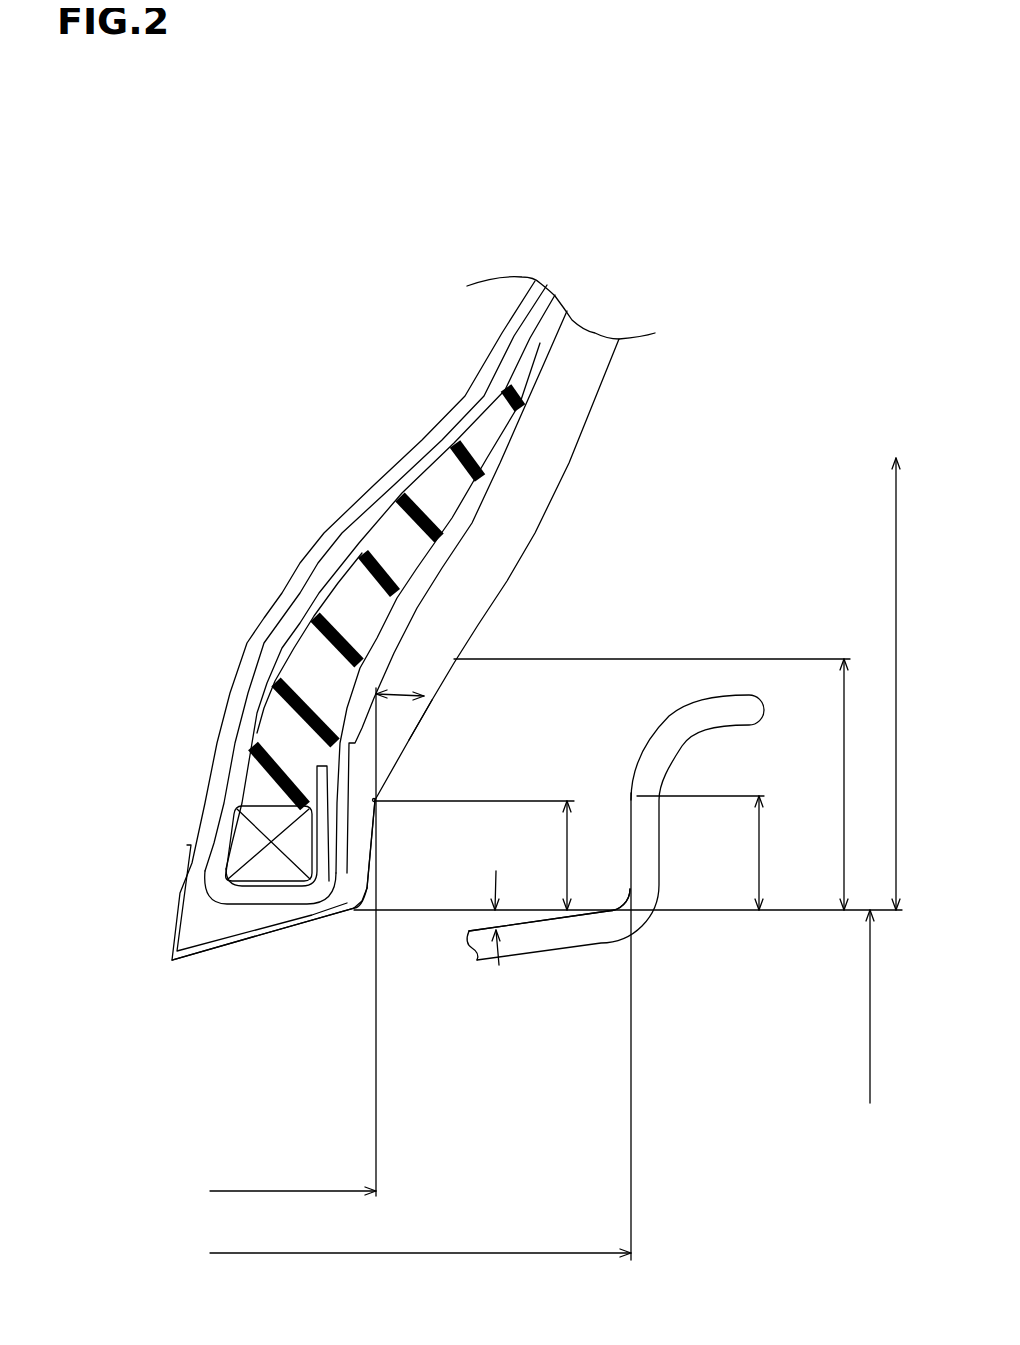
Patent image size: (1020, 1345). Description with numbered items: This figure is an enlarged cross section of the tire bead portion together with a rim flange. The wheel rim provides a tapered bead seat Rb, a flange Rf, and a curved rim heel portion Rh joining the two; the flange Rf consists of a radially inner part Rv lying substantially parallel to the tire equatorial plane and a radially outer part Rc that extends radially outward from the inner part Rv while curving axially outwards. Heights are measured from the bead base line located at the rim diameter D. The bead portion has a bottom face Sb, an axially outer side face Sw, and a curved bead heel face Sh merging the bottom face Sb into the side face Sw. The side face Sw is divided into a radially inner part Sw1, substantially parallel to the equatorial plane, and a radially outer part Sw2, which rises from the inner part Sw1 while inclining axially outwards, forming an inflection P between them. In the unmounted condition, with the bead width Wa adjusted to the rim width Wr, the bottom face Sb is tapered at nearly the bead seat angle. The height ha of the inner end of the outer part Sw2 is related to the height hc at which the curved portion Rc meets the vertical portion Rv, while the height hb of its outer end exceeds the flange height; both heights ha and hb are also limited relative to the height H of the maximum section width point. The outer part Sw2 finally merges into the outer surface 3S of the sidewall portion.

The outer surface of the sidewall portion 3S is at (595, 400).
The inflection P is at (367, 796).
The radially outer part Sw2 is at (407, 737).
The radially inner part Sw1 is at (373, 847).
The axially outer side face Sw is at (567, 697).
The height of the radially inner end of the radially outer part ha is at (482, 855).
The height of the radially outer end of the radially outer part hb is at (845, 784).
The height at which the curved portion meets the vertical portion hc is at (707, 853).
The height of the maximum cross sectional width point H is at (896, 684).
The rim diameter D is at (872, 1023).
The radially outer part of the flange Rc is at (695, 717).
The flange Rf is at (775, 682).
The radially inner part of the flange Rv is at (630, 845).
The curved rim heel portion Rh is at (643, 917).
The bead seat Rb is at (553, 922).
The bottom face Sb is at (203, 950).
The curved bead heel face Sh is at (363, 913).
The bead width Wa is at (266, 1193).
The rim width Wr is at (395, 1253).